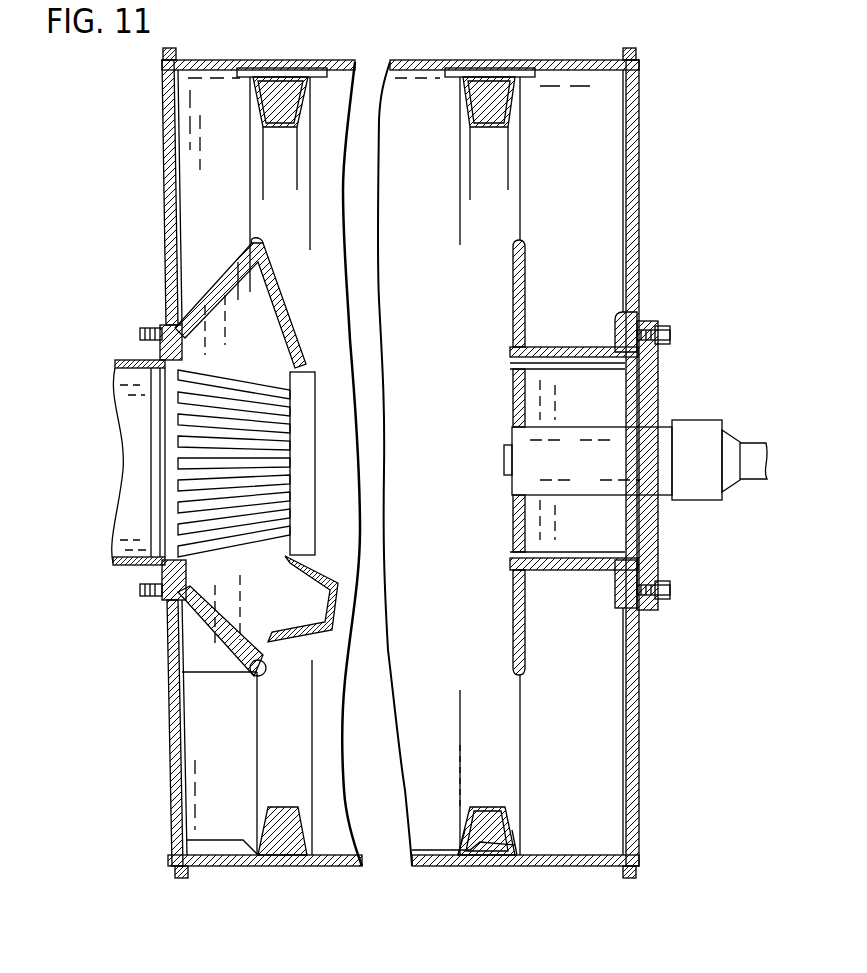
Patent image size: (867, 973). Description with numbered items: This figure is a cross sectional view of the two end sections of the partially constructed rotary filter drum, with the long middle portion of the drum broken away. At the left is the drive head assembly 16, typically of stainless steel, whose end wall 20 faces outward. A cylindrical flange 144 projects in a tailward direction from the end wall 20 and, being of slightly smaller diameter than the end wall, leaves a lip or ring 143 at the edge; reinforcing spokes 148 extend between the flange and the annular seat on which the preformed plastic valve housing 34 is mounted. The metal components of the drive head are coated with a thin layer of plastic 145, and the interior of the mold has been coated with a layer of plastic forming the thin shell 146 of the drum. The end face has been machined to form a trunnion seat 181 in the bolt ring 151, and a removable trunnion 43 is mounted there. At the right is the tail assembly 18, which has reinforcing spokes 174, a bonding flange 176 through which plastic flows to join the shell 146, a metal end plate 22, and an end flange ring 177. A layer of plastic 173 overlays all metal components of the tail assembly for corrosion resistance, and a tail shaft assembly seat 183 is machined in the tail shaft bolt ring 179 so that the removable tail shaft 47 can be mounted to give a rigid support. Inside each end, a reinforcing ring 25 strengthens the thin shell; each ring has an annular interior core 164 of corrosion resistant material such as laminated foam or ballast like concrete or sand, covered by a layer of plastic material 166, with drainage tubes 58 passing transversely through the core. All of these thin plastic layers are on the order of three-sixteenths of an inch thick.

The drive head assembly 16 is at (150, 169).
The tail assembly 18 is at (654, 264).
The end wall 20 is at (168, 730).
The metal end plate 22 is at (640, 678).
The reinforcing ring 25 is at (302, 134).
The valve housing 34 is at (292, 323).
The trunnion 43 is at (118, 375).
The tail shaft 47 is at (672, 427).
The drainage tube 58 is at (460, 88).
The lip or ring 143 is at (170, 48).
The cylindrical flange 144 is at (241, 868).
The layer of plastic 145 is at (178, 120).
The shell 146 is at (210, 855).
The reinforcing spokes 148 is at (218, 170).
The bolt ring 151 is at (162, 600).
The annular interior core 164 is at (480, 812).
The layer of plastic material 166 is at (468, 838).
The layer of plastic 173 is at (626, 212).
The reinforcing spokes 174 is at (583, 190).
The bonding flange 176 is at (556, 871).
The end flange ring 177 is at (639, 54).
The tail shaft bolt ring 179 is at (642, 321).
The trunnion seat 181 is at (170, 330).
The tail shaft assembly seat 183 is at (670, 330).